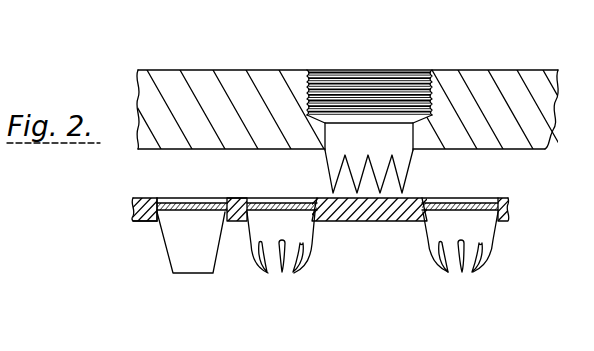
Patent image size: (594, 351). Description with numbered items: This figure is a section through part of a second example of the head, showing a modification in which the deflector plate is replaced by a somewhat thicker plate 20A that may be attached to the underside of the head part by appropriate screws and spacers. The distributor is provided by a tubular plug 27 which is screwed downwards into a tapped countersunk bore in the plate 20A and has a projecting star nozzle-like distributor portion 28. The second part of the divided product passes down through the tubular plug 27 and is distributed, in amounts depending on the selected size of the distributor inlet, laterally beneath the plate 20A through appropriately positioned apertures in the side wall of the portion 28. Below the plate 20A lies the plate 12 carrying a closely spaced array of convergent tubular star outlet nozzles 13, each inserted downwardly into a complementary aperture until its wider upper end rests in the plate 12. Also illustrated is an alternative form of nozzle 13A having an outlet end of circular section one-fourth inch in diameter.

The plate 20A is at (497, 92).
The tubular plug 27 is at (385, 117).
The star nozzle-like distributor portion 28 is at (402, 162).
The plate 12 is at (509, 212).
The outlet nozzle 13 is at (482, 233).
The nozzle 13A is at (173, 245).